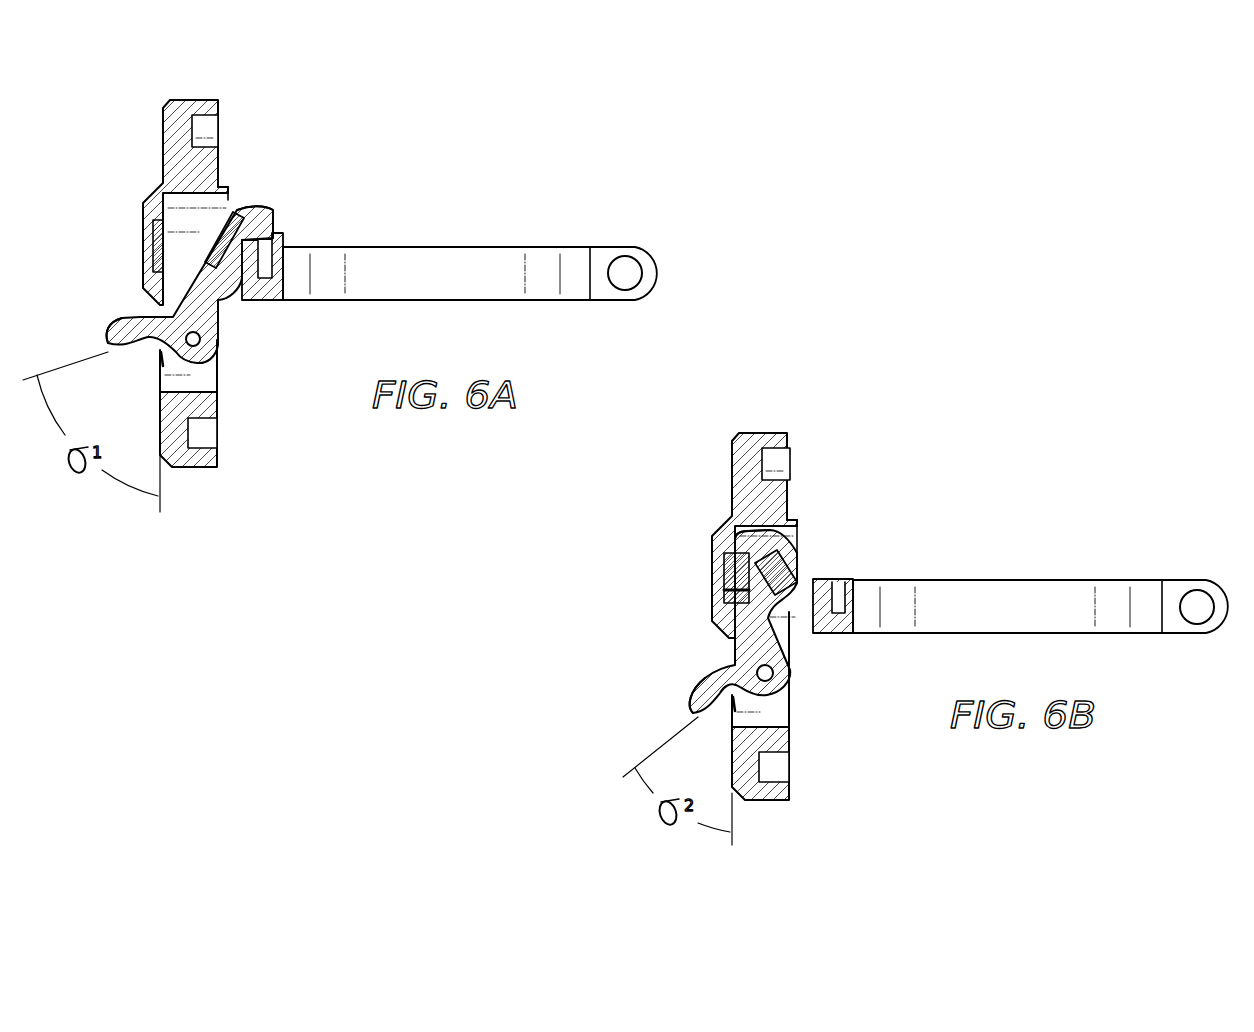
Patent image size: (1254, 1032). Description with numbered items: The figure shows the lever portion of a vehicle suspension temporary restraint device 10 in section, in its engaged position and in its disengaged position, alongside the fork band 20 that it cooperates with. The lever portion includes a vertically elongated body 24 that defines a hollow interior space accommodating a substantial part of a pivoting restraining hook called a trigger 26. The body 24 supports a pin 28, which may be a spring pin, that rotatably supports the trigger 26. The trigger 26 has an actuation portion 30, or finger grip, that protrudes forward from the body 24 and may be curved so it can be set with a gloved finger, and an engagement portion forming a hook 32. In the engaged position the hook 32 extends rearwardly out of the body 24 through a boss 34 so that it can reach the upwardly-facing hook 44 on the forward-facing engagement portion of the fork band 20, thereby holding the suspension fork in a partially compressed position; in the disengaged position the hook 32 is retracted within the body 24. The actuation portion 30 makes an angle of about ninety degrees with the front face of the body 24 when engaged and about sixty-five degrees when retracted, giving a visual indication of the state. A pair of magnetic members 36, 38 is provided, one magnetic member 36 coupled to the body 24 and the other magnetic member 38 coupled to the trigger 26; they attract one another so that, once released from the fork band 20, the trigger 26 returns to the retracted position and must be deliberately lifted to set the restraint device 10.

In FIG. 6A, the restraint device 10 is at (408, 118).
In FIG. 6B, the restraint device 10 is at (1030, 484).
In FIG. 6A, the fork band 20 is at (645, 240).
In FIG. 6B, the fork band 20 is at (1178, 552).
In FIG. 6A, the body 24 is at (160, 97).
In FIG. 6B, the body 24 is at (730, 432).
In FIG. 6A, the trigger 26 is at (126, 316).
In FIG. 6B, the trigger 26 is at (695, 676).
In FIG. 6A, the pin 28 is at (206, 341).
In FIG. 6B, the pin 28 is at (787, 675).
In FIG. 6A, the actuation portion 30 is at (120, 356).
In FIG. 6B, the actuation portion 30 is at (705, 718).
In FIG. 6A, the hook 32 is at (272, 211).
In FIG. 6B, the hook 32 is at (740, 536).
In FIG. 6A, the boss 34 is at (226, 188).
In FIG. 6B, the boss 34 is at (796, 521).
In FIG. 6A, the magnetic member 36 is at (153, 245).
In FIG. 6B, the magnetic member 36 is at (724, 580).
In FIG. 6A, the magnetic member 38 is at (240, 213).
In FIG. 6B, the magnetic member 38 is at (748, 566).
In FIG. 6A, the upwardly-facing hook 44 is at (267, 236).
In FIG. 6B, the upwardly-facing hook 44 is at (822, 580).